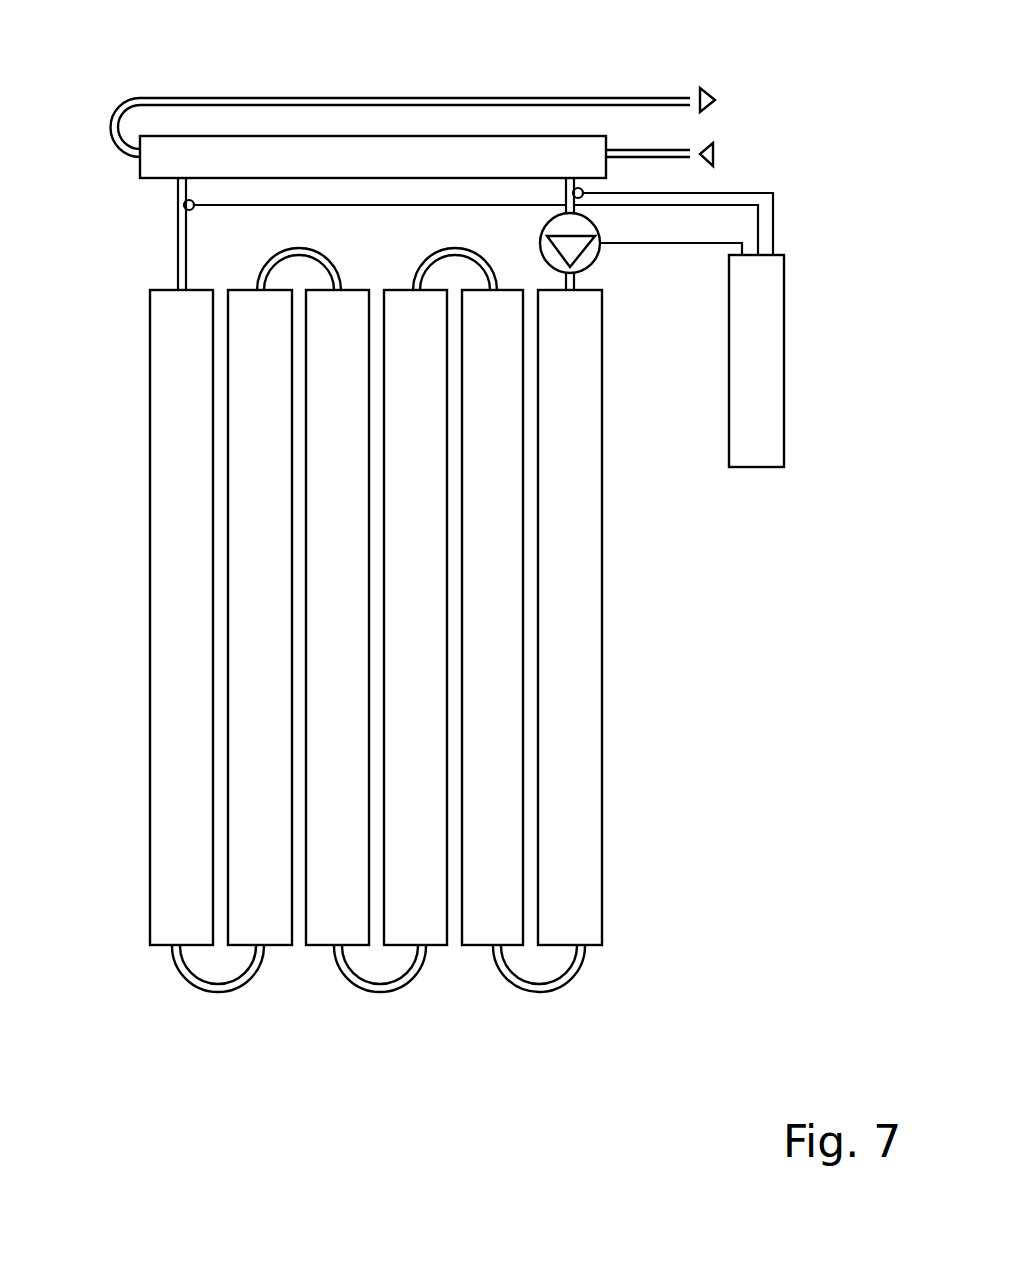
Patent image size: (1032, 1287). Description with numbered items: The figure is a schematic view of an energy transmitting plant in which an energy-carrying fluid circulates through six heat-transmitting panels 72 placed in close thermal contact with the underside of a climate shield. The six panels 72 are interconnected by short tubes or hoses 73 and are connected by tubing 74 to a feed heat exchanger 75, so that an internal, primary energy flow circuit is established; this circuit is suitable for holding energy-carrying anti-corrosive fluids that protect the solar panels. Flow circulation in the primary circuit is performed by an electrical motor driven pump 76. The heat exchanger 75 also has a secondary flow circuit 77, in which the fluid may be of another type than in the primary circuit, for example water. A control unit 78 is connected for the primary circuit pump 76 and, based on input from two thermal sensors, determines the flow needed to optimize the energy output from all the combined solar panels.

The heat-transmitting panels 72 is at (178, 700).
The short tubes or hoses 73 is at (272, 262).
The tubing 74 is at (182, 250).
The feed heat exchanger 75 is at (188, 157).
The electrical motor driven pump 76 is at (598, 240).
The secondary flow circuit 77 is at (595, 97).
The control unit 78 is at (753, 422).